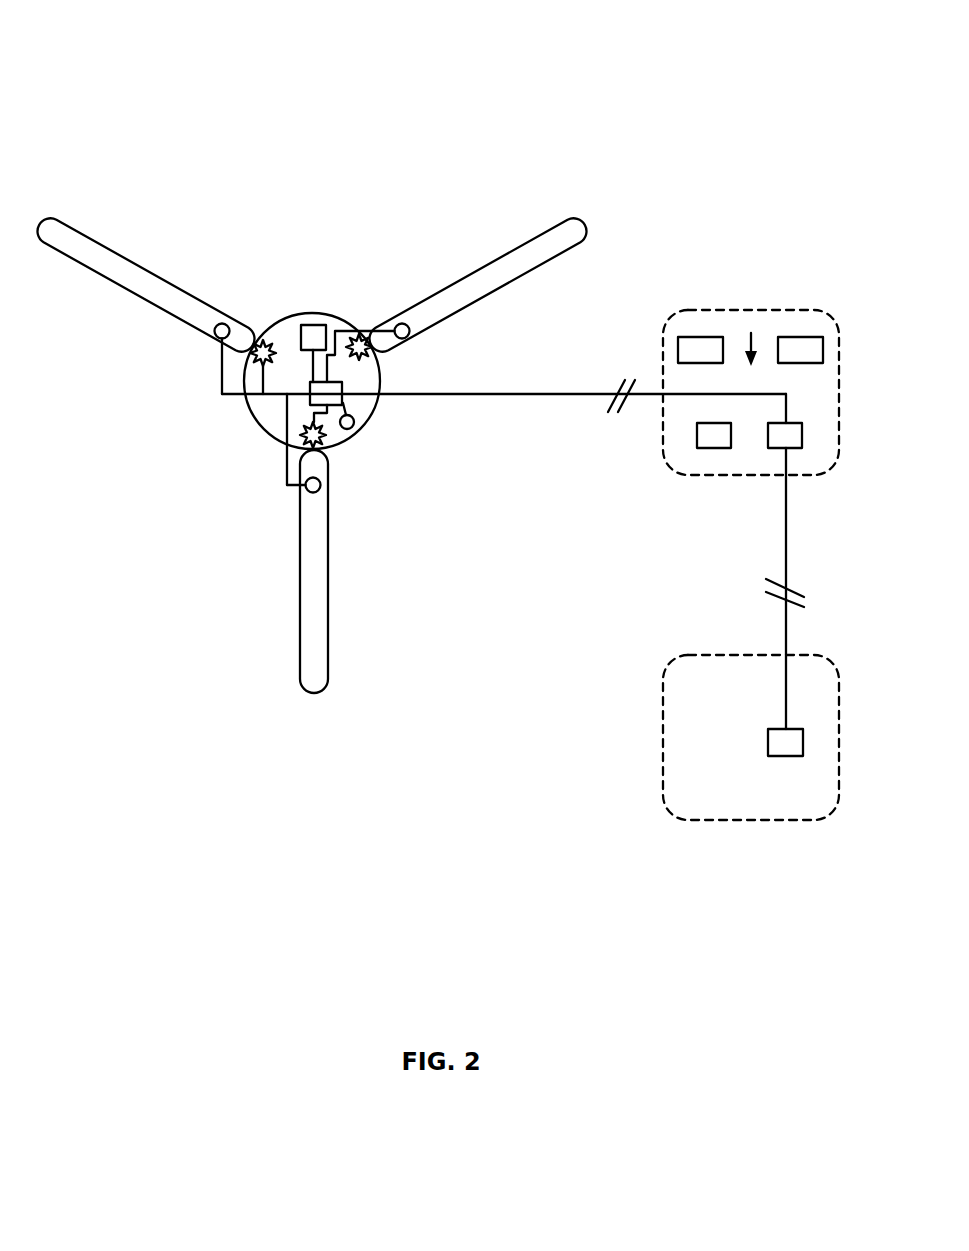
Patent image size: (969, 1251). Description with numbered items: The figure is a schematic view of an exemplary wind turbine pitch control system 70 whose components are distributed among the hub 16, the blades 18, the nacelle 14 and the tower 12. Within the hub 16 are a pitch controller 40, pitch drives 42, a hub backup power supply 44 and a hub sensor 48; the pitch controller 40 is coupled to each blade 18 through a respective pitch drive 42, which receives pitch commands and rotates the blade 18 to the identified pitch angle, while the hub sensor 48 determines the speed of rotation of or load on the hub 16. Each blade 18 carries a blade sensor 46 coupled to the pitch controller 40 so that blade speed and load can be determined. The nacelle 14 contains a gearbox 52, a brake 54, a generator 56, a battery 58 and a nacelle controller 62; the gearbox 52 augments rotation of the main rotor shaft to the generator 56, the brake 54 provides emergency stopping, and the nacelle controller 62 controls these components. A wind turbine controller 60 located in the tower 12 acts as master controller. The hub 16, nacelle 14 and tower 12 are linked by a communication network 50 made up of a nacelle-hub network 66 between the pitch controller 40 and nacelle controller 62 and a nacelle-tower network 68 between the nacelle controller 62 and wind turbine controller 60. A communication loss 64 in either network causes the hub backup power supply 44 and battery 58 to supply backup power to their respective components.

The wind turbine pitch control system 70 is at (120, 98).
The blade 18 is at (117, 291).
The blade sensor 46 is at (214, 337).
The hub 16 is at (273, 323).
The hub backup power supply 44 is at (308, 324).
The pitch drive 42 is at (363, 340).
The pitch controller 40 is at (342, 397).
The hub sensor 48 is at (349, 429).
The nacelle-hub network 66 is at (568, 393).
The nacelle-tower network 68 is at (787, 541).
The communication loss 64 is at (610, 428).
The communication network 50 is at (512, 428).
The nacelle 14 is at (748, 309).
The gearbox 52 is at (690, 337).
The generator 56 is at (804, 337).
The brake 54 is at (753, 338).
The battery 58 is at (714, 448).
The nacelle controller 62 is at (802, 438).
The tower 12 is at (796, 821).
The wind turbine controller 60 is at (768, 742).